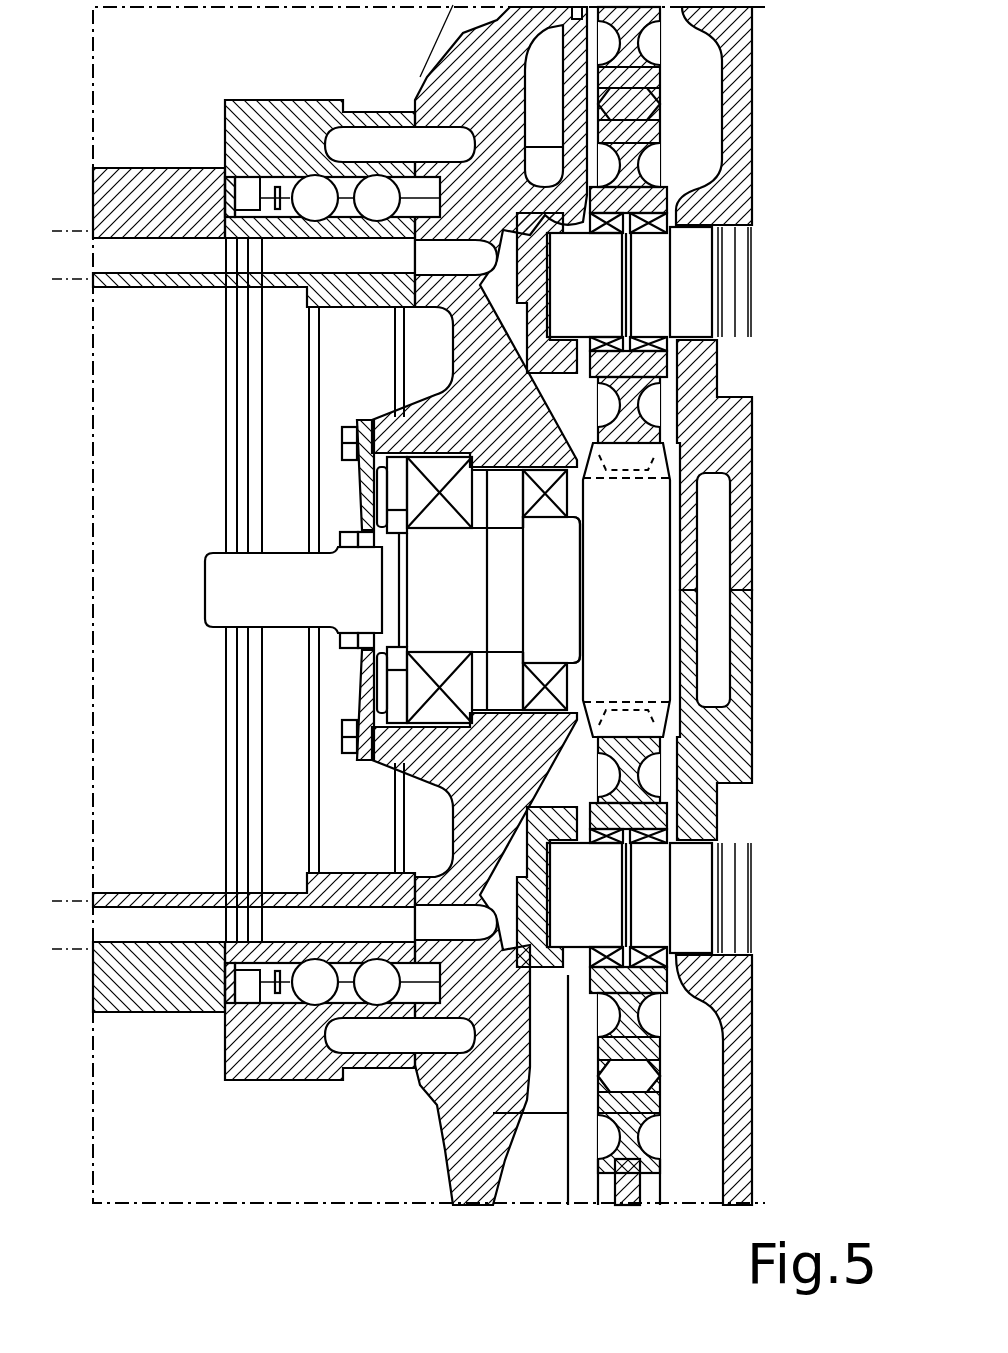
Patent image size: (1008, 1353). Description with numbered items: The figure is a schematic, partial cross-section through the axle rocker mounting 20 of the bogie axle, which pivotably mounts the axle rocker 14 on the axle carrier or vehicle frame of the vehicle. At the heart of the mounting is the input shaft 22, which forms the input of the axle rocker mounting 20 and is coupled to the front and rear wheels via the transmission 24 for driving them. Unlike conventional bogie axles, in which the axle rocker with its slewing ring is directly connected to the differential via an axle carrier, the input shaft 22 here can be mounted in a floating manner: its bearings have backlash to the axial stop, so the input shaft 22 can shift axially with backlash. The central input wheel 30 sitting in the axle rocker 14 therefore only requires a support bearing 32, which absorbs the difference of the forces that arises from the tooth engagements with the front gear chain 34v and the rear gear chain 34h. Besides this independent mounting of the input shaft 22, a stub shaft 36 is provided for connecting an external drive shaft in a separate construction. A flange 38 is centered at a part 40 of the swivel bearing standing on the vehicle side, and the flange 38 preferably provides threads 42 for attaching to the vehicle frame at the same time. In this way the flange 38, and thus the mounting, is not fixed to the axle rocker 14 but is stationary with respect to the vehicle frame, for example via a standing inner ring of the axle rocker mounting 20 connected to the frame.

The axle rocker 14 is at (455, 1140).
The axle rocker mounting 20 is at (232, 1097).
The input shaft 22 is at (572, 608).
The transmission 24 is at (590, 1212).
The central input wheel 30 is at (648, 568).
The support bearing 32 is at (560, 684).
The front gear chain 34v is at (695, 112).
The rear gear chain 34h is at (695, 1122).
The stub shaft 36 is at (210, 607).
The flange 38 is at (465, 752).
The part of the swivel bearing 40 is at (283, 950).
The threads 42 is at (320, 245).